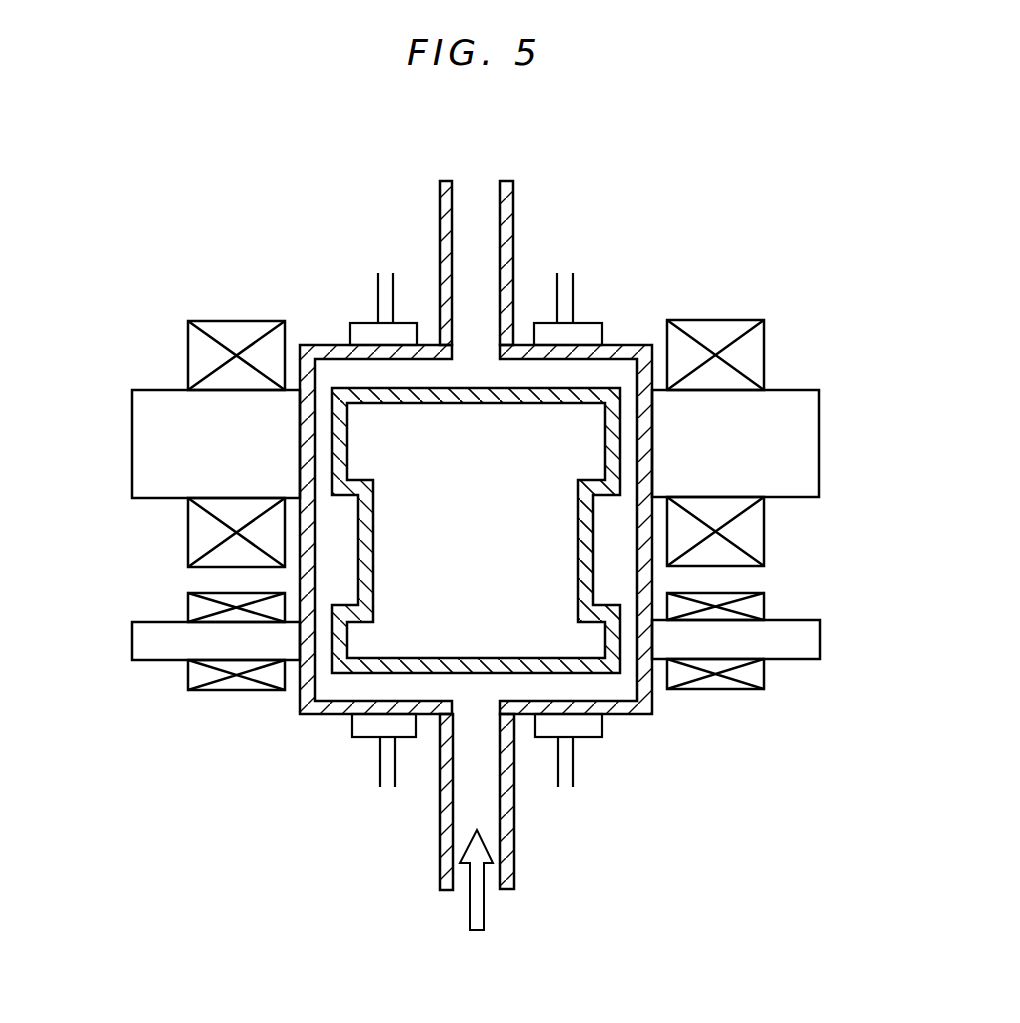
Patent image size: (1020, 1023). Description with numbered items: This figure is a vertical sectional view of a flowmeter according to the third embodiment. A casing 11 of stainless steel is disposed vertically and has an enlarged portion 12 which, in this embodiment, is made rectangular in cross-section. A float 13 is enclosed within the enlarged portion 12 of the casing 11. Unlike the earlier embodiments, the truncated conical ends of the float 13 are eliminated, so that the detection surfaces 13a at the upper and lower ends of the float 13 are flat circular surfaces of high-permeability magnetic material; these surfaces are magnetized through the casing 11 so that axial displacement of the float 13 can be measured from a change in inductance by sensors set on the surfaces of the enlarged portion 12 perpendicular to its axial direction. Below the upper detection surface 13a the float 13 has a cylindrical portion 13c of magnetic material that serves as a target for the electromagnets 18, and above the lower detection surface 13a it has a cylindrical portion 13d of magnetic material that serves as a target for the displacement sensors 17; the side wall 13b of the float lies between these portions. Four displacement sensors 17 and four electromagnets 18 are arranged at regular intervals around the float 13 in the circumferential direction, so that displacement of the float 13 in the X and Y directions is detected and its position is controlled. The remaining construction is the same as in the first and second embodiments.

The casing 11 is at (513, 200).
The enlarged portion 12 is at (637, 346).
The float 13 is at (473, 438).
The detection surface 13a is at (540, 377).
The side wall portion 13b is at (575, 553).
The cylindrical portion 13c is at (607, 465).
The cylindrical portion 13d is at (595, 635).
The displacement sensor 17 is at (132, 648).
The electromagnet 18 is at (132, 447).